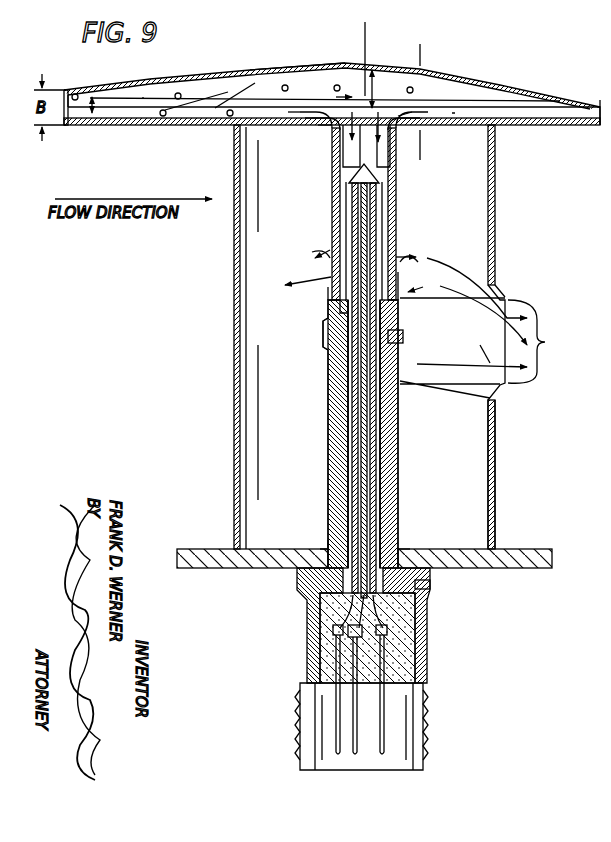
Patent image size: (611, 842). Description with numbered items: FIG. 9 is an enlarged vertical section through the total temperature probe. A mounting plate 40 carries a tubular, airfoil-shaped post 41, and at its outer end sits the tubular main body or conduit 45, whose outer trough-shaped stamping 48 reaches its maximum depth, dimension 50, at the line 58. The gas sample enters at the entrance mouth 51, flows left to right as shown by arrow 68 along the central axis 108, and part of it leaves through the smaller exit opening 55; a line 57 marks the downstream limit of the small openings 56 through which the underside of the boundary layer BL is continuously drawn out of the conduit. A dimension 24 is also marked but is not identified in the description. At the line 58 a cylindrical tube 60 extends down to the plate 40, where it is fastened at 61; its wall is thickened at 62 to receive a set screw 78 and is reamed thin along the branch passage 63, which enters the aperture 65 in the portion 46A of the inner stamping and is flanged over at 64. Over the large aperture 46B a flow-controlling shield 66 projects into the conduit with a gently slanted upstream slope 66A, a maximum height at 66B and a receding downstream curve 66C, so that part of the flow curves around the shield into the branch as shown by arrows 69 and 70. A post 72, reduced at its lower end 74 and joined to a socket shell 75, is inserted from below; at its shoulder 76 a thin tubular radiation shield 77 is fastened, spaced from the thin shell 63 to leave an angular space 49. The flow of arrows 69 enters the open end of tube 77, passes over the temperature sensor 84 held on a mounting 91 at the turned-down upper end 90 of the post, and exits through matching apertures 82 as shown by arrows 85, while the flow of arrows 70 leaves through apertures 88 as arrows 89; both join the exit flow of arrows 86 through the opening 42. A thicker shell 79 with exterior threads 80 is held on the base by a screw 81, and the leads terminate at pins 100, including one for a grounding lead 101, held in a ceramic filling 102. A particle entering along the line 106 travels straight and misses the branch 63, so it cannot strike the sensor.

The dimension of airfoil section 24 is at (96, 97).
The mounting plate 40 is at (520, 551).
The post 41 is at (496, 440).
The opening 42 is at (549, 343).
The tubular main body 45 is at (351, 60).
The portion of inner conduit stamping 46A is at (462, 128).
The large aperture 46B is at (296, 130).
The outer trough shaped stamping 48 is at (276, 74).
The angular space 49 is at (330, 221).
The dimension of maximum depth 50 is at (376, 80).
The entrance mouth 51 is at (66, 118).
The exit opening 55 is at (598, 118).
The openings 56 is at (75, 93).
The line 57— 57 is at (422, 57).
The line 58 is at (367, 31).
The cylindrical tube 60 is at (328, 413).
The fastening 61 is at (322, 547).
The thickened wall portion 62 is at (322, 340).
The branch passage 63 is at (331, 197).
The flange 64 is at (401, 121).
The aperture 65 is at (403, 130).
The flow controlling shield 66 is at (276, 140).
The upstream slope 66A is at (288, 124).
The maximum height 66B is at (310, 166).
The downstream slope 66C is at (318, 130).
The arrow 68 is at (323, 99).
The arrows 69 is at (356, 125).
The arrows 70 is at (381, 124).
The post 72 is at (345, 451).
The reduced diameter lower end 74 is at (396, 556).
The socket shell 75 is at (318, 579).
The reduced portion 76 is at (336, 339).
The radiation shield 77 is at (336, 216).
The set screw 78 is at (404, 338).
The thicker shell 79 is at (416, 634).
The exterior threads 80 is at (427, 718).
The screw 81 is at (432, 585).
The matching apertures 82 is at (328, 287).
The temperature sensor 84 is at (383, 186).
The arrows 85 is at (320, 276).
The arrows 86 is at (472, 354).
The apertures 88 is at (328, 250).
The arrows 89 is at (312, 252).
The turned down upper end 90 is at (392, 223).
The mounting 91 is at (381, 194).
The pins 100 is at (382, 755).
The grounding lead 101 is at (338, 755).
The ceramic filling 102 is at (396, 655).
The line 106— 106 is at (143, 97).
The central axis 108 is at (133, 108).
The boundary layer BL is at (193, 84).